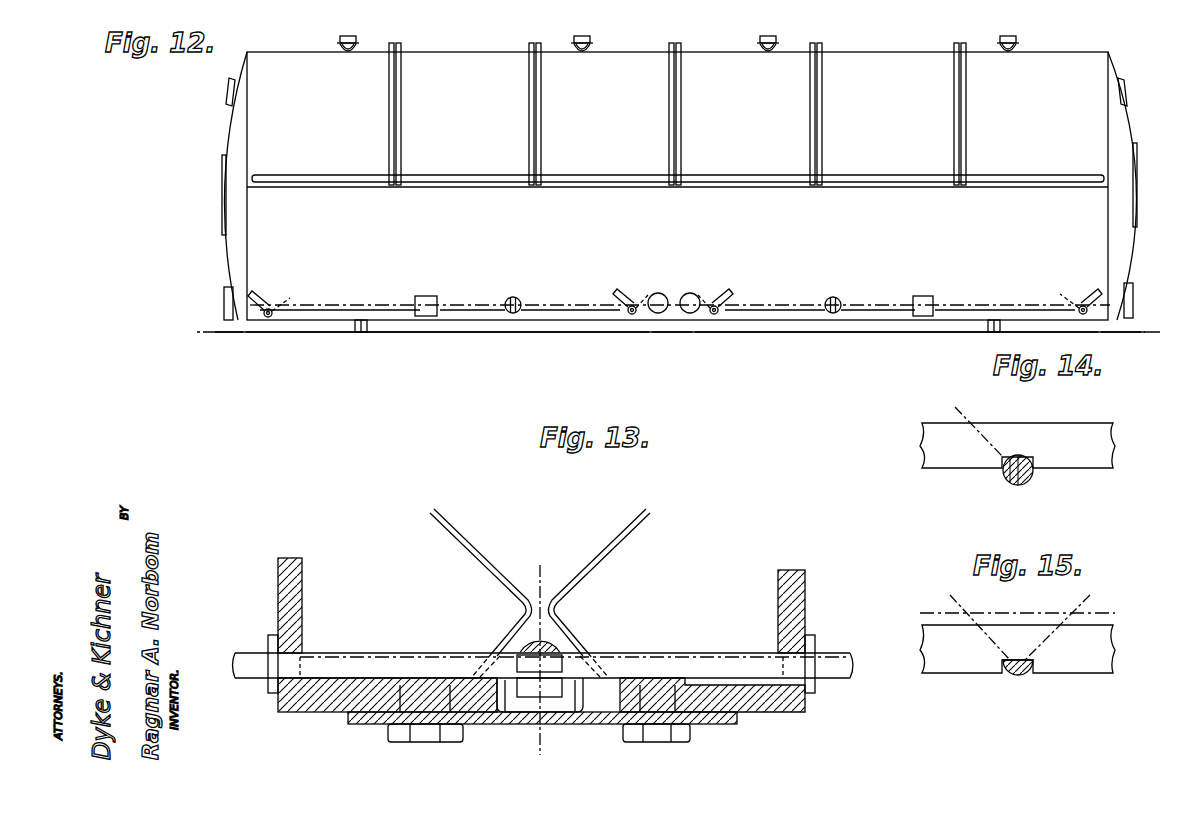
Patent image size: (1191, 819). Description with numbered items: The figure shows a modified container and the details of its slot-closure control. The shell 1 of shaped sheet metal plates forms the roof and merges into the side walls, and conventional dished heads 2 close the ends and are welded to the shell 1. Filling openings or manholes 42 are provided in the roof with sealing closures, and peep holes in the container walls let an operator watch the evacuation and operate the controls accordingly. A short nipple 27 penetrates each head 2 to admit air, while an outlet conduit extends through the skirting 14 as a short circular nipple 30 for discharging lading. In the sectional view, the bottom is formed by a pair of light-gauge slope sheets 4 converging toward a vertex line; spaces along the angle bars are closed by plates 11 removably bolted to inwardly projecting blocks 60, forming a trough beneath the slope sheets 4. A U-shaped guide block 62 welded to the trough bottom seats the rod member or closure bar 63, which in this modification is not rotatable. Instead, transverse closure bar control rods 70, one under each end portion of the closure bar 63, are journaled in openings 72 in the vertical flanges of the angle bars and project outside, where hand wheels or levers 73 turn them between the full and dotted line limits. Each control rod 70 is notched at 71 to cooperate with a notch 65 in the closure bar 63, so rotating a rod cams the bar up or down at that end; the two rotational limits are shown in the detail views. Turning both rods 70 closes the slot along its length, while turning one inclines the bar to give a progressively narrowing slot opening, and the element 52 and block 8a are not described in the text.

In FIG. 12, the shell 1 is at (628, 64).
In FIG. 12, the dished heads 2 is at (238, 136).
In FIG. 13, the slope sheets 4 is at (465, 548).
In FIG. 13, the support block 8a is at (280, 708).
In FIG. 13, the plates 11 is at (712, 724).
In FIG. 13, the skirting 14 is at (522, 585).
In FIG. 12, the nipple 27 is at (224, 302).
In FIG. 12, the nipple 30 is at (660, 293).
In FIG. 12, the filling openings or manholes 42 is at (348, 36).
In FIG. 12, the coupling box 52 is at (432, 316).
In FIG. 13, the blocks 60 is at (448, 690).
In FIG. 13, the guide block 62 is at (577, 698).
In FIG. 12, the rod member 63 is at (486, 300).
In FIG. 14, the rod member 63 is at (1115, 450).
In FIG. 15, the rod member 63 is at (1100, 660).
In FIG. 13, the notch 65 is at (556, 636).
In FIG. 14, the notch 65 is at (1030, 458).
In FIG. 15, the notch 65 is at (1025, 660).
In FIG. 12, the closure bar control rods 70 is at (267, 317).
In FIG. 13, the closure bar control rods 70 is at (830, 652).
In FIG. 14, the closure bar control rods 70 is at (1030, 478).
In FIG. 15, the closure bar control rods 70 is at (1025, 675).
In FIG. 13, the notch 71 is at (550, 668).
In FIG. 14, the notch 71 is at (1010, 474).
In FIG. 15, the notch 71 is at (1015, 660).
In FIG. 13, the openings 72 is at (298, 648).
In FIG. 12, the hand wheels, levers, or the like 73 is at (275, 304).